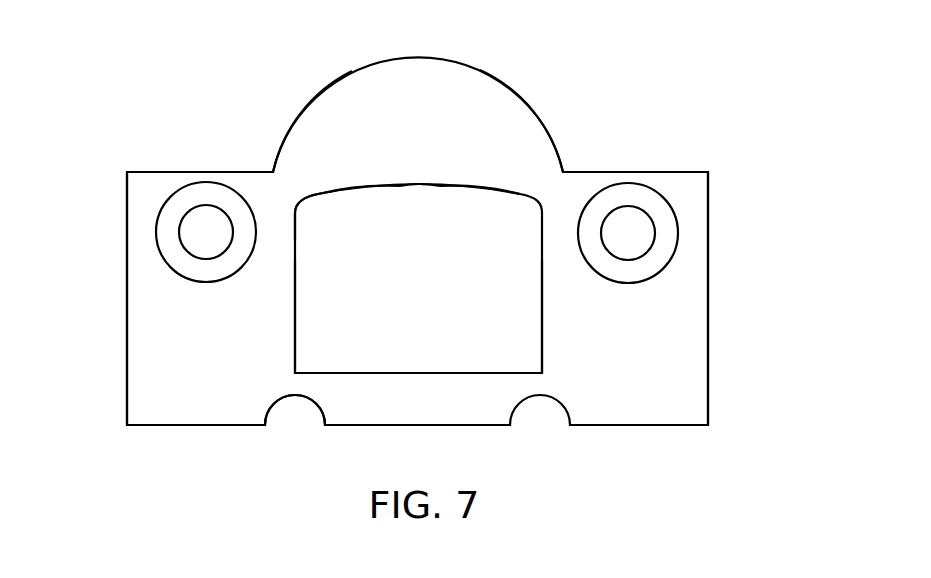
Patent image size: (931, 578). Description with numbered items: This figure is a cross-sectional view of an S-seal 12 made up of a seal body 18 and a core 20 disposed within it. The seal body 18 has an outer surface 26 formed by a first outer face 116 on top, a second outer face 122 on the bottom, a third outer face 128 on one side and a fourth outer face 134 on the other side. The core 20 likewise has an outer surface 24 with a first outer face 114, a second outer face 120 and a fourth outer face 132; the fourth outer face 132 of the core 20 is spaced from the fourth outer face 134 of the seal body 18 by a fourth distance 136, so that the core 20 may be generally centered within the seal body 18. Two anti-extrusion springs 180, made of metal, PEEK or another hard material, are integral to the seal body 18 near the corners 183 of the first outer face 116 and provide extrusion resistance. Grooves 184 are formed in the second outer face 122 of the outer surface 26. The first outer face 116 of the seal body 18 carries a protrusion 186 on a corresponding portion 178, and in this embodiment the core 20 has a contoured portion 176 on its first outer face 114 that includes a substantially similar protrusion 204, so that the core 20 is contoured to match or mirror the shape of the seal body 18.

The S-seal 12 is at (612, 57).
The seal body 18 is at (198, 172).
The outer surface of the seal body 26 is at (250, 172).
The corresponding portion of the seal body 178 is at (352, 71).
The protrusion 186 is at (480, 70).
The first outer face of the seal body 116 is at (608, 172).
The corners 183 is at (685, 172).
The anti-extrusion springs 180 is at (172, 228).
The protrusion 204 is at (420, 184).
The contoured portion of the core 176 is at (390, 186).
The first outer face of the core 114 is at (445, 184).
The outer surface of the core 24 is at (313, 203).
The fourth outer face of the core 132 is at (295, 300).
The fourth distance 136 is at (542, 300).
The core 20 is at (542, 347).
The second outer face of the core 120 is at (440, 373).
The fourth outer face of the seal body 134 is at (127, 298).
The third outer face of the seal body 128 is at (708, 298).
The second outer face of the seal body 122 is at (418, 425).
The grooves 184 is at (283, 398).